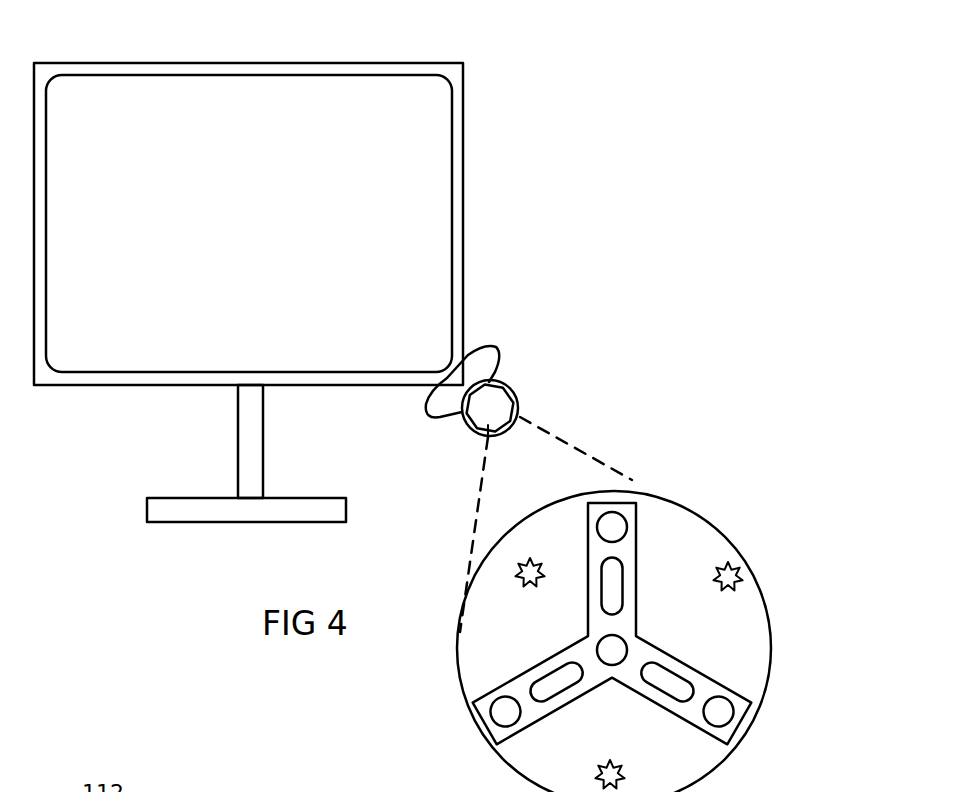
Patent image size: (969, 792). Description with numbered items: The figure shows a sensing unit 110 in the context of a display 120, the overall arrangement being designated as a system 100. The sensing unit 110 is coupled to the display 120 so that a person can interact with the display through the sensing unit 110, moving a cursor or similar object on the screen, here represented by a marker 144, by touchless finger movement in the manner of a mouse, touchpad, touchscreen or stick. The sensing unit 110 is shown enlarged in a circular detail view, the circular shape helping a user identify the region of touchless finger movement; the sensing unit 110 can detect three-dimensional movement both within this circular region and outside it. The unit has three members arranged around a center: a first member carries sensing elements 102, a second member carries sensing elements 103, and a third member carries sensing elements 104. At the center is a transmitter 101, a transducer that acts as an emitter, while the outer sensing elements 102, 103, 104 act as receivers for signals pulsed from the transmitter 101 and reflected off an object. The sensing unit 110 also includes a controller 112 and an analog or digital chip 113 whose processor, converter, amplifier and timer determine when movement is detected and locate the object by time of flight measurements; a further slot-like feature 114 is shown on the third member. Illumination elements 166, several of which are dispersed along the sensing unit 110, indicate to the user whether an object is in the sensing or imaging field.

The display system 100 is at (702, 36).
The display 120 is at (463, 150).
The display marker 144 is at (240, 237).
The sensing unit 110 is at (517, 385).
The transmitter 101 is at (638, 634).
The sensing elements 102 is at (617, 512).
The sensing elements 103 is at (737, 690).
The sensing elements 104 is at (493, 709).
The controller 112 is at (624, 590).
The analog or digital chip 113 is at (657, 686).
The third slot 114 is at (560, 665).
The illumination element 166 is at (745, 575).